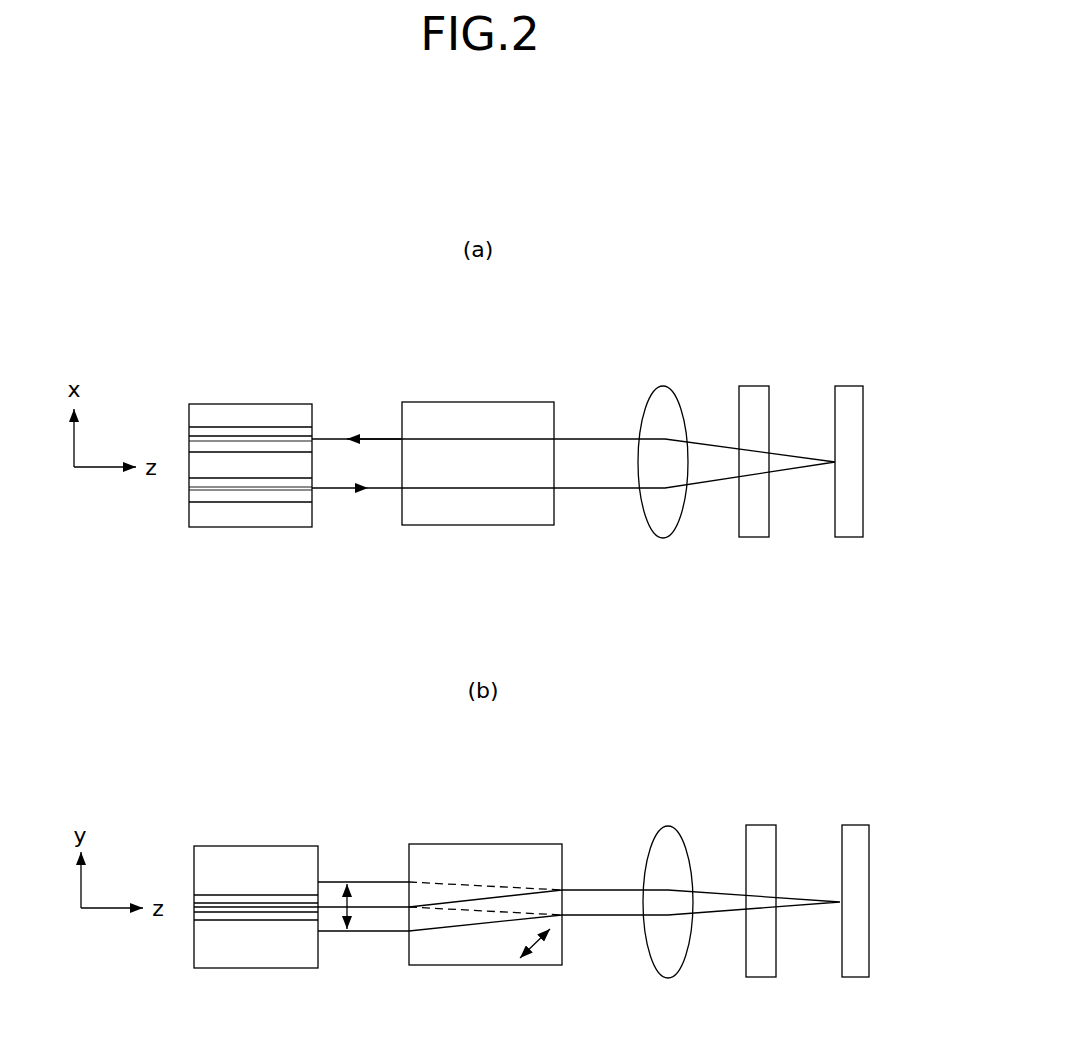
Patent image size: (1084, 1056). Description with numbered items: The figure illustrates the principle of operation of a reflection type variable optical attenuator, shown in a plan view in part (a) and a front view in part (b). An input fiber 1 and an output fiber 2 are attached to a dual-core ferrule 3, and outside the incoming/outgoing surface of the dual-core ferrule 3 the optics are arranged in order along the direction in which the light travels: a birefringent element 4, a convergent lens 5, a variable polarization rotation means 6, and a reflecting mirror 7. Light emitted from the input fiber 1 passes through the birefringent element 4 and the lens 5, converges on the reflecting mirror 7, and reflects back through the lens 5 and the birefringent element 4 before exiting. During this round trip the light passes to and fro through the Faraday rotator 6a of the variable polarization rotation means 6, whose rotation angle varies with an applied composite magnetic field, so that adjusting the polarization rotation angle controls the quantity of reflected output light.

The input fiber 1 is at (265, 503).
The output fiber 2 is at (264, 425).
The dual-core ferrule 3 is at (232, 403).
The birefringent element 4 is at (478, 412).
The convergent lens 5 is at (662, 402).
The variable polarization rotation means 6 is at (753, 385).
The Faraday rotator 6a is at (756, 517).
The reflecting mirror 7 is at (848, 400).